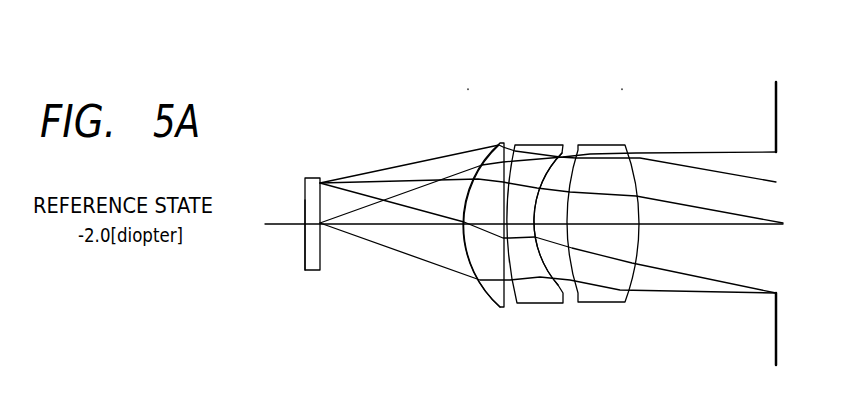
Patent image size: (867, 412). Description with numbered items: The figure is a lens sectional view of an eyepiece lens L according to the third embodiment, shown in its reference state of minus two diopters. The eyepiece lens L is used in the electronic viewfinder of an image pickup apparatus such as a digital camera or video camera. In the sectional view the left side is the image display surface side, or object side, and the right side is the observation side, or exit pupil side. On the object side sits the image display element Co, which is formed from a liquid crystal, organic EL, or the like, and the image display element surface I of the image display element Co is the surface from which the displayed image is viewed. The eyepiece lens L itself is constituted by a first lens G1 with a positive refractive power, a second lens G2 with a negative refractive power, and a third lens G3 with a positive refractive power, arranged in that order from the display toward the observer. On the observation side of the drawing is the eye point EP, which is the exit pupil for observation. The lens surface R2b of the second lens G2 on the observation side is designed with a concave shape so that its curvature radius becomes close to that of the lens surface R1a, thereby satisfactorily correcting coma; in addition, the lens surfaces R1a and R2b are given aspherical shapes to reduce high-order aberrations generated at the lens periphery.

The image display element Co is at (312, 186).
The image display element surface I is at (305, 255).
The eyepiece lens L is at (622, 89).
The first lens G1 is at (496, 150).
The second lens G2 is at (531, 156).
The third lens G3 is at (601, 168).
The lens surface R1a is at (478, 282).
The lens surface R2b is at (545, 266).
The eye point EP is at (775, 91).